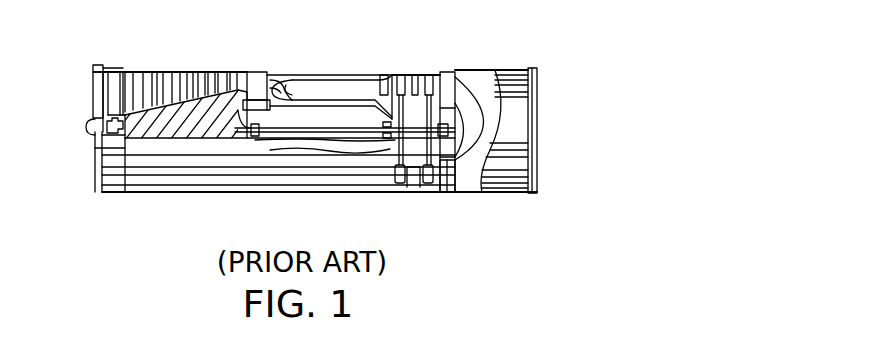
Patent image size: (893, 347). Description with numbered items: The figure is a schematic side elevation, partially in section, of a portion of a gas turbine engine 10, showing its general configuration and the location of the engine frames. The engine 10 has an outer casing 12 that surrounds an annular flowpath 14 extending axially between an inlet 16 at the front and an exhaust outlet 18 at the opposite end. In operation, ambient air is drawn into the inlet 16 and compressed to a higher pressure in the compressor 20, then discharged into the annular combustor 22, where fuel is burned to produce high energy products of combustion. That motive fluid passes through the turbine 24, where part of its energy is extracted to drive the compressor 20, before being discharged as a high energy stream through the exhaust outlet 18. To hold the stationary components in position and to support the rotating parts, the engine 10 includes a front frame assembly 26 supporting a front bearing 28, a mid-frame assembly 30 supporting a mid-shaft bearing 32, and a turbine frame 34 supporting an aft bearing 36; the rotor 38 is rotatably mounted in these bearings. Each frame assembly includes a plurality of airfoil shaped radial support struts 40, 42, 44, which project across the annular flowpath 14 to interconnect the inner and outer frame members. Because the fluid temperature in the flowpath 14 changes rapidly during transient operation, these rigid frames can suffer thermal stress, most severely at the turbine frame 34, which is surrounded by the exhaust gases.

The gas turbine engine 10 is at (178, 202).
The outer casing 12 is at (352, 72).
The annular flowpath 14 is at (123, 88).
The inlet 16 is at (100, 95).
The exhaust outlet 18 is at (536, 96).
The compressor 20 is at (187, 80).
The annular combustor 22 is at (303, 90).
The turbine 24 is at (428, 80).
The front frame assembly 26 is at (94, 81).
The front bearing 28 is at (88, 137).
The mid-frame assembly 30 is at (260, 63).
The mid-shaft bearing 32 is at (243, 118).
The turbine frame 34 is at (453, 127).
The aft bearing 36 is at (441, 130).
The rotor 38 is at (352, 135).
The radial support struts 40 is at (110, 107).
The radial support struts 42 is at (253, 86).
The radial support struts 44 is at (447, 175).